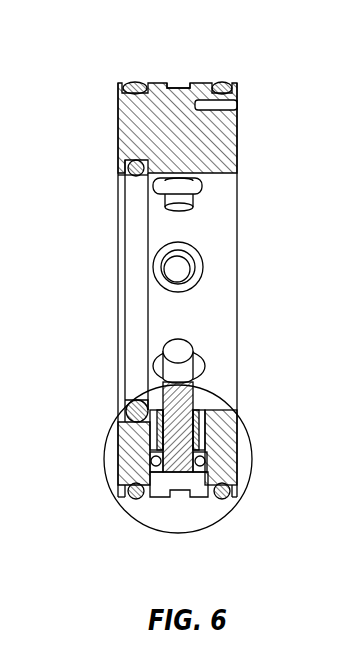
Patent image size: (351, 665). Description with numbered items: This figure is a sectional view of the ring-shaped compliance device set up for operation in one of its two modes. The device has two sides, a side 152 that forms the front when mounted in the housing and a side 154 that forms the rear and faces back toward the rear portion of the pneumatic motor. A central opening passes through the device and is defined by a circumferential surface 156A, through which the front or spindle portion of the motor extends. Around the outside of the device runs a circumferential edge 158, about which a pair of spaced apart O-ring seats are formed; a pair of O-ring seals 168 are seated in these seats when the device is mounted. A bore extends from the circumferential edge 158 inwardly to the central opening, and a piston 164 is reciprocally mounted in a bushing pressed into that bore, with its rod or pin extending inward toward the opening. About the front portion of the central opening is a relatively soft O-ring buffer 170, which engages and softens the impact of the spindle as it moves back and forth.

The side 152 is at (118, 150).
The side 154 is at (238, 143).
The circumferential surface 156A is at (215, 280).
The circumferential edge 158 is at (178, 87).
The piston 164 is at (183, 365).
The O-ring seals 168 is at (137, 83).
The O-ring buffer 170 is at (118, 177).